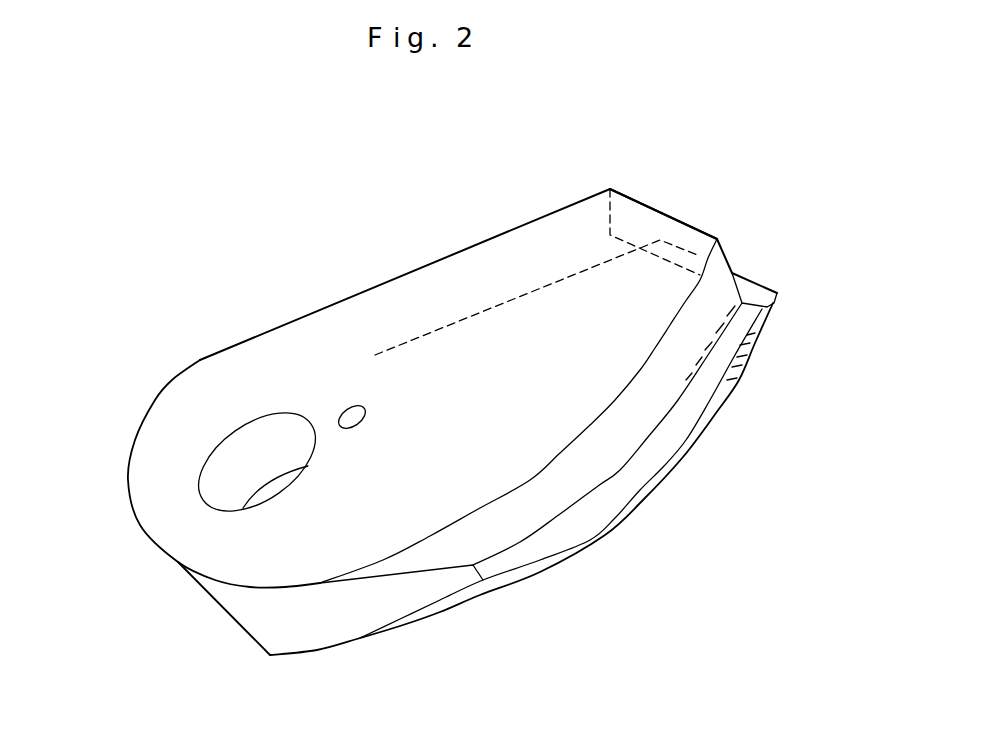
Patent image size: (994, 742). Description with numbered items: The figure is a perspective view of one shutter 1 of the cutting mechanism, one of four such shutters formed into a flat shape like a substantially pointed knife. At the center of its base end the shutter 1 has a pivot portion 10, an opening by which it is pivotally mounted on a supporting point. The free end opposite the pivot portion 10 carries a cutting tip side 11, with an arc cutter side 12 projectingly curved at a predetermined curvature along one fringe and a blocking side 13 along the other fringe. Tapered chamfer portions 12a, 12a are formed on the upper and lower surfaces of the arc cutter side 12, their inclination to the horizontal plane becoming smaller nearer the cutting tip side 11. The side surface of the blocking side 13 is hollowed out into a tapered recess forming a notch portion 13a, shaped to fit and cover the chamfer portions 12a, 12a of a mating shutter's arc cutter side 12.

The shutter 1 is at (403, 355).
The pivot portion 10 is at (253, 463).
The cutting tip side 11 is at (725, 258).
The arc cutter side 12 is at (643, 497).
The chamfer portion 12a is at (593, 463).
The blocking side 13 is at (683, 212).
The notch portion 13a is at (628, 240).